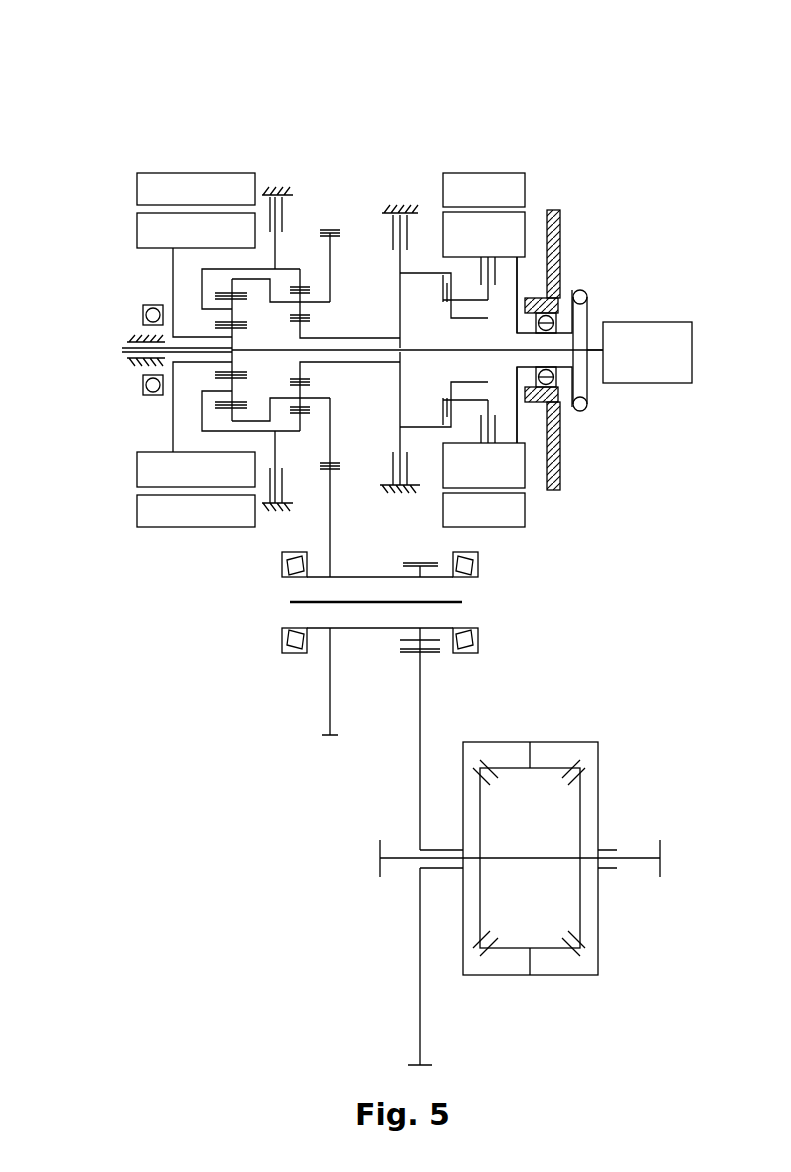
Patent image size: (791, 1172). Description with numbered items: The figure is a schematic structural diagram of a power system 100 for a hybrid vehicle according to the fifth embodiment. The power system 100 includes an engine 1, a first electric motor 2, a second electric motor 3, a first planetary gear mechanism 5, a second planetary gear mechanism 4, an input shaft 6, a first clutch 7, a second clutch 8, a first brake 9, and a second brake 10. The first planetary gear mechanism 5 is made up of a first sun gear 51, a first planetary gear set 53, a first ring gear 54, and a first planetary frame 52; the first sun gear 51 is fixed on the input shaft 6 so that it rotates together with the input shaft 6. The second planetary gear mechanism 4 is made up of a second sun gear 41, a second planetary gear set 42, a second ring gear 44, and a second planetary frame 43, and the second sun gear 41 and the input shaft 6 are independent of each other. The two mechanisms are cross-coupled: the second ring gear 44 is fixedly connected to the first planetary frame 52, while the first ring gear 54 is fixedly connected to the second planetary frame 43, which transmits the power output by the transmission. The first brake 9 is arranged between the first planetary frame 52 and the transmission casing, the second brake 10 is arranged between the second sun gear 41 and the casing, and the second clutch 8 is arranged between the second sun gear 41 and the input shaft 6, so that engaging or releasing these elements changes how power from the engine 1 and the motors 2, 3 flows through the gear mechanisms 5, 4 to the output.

The power system 100 is at (724, 56).
The engine 1 is at (658, 345).
The first electric motor 2 is at (533, 162).
The second electric motor 3 is at (153, 159).
The second planetary gear mechanism 4 is at (277, 296).
The second sun gear 41 is at (309, 300).
The second planetary gear set 42 is at (305, 318).
The second planetary frame 43 is at (328, 437).
The second ring gear 44 is at (311, 267).
The first planetary gear mechanism 5 is at (200, 306).
The first sun gear 51 is at (232, 332).
The first planetary frame 52 is at (215, 376).
The first planetary gear set 53 is at (132, 347).
The first ring gear 54 is at (215, 406).
The input shaft 6 is at (455, 393).
The first clutch 7 is at (447, 352).
The second clutch 8 is at (440, 418).
The first brake 9 is at (278, 192).
The second brake 10 is at (410, 212).